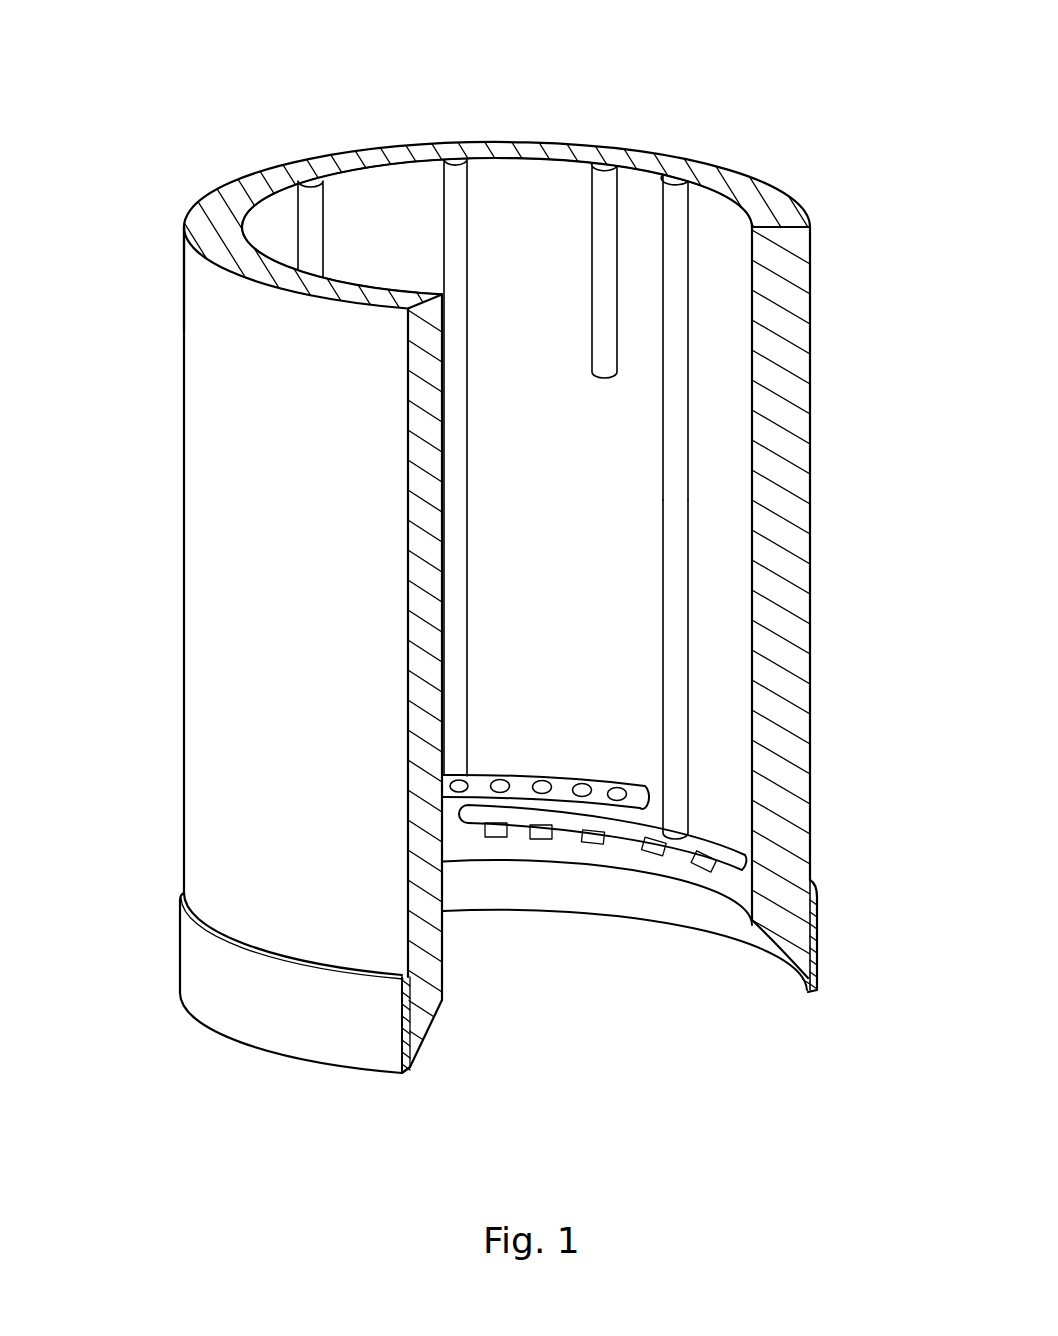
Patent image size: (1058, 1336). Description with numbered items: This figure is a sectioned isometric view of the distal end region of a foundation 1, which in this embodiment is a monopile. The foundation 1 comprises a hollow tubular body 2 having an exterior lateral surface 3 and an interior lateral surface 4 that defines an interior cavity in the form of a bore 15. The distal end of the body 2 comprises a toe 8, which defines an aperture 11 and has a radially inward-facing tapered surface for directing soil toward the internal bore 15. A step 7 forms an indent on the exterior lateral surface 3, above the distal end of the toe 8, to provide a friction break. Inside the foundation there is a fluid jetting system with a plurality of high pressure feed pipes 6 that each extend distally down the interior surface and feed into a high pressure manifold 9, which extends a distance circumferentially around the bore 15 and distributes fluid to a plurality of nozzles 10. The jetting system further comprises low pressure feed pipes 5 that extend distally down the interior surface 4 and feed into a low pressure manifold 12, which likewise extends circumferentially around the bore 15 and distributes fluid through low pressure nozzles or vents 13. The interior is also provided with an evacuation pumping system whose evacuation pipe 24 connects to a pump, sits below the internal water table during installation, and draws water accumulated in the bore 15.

The foundation 1 is at (214, 128).
The hollow tubular body 2 is at (183, 308).
The exterior lateral surface 3 is at (195, 267).
The interior lateral surface 4 is at (378, 205).
The low pressure feed pipe 5 is at (460, 190).
The high pressure feed pipe 6 is at (673, 200).
The step 7 is at (820, 923).
The toe 8 is at (757, 932).
The high pressure manifold 9 is at (682, 842).
The nozzle 10 is at (593, 840).
The aperture 11 is at (465, 948).
The low pressure manifold 12 is at (480, 784).
The low pressure nozzles or vents 13 is at (460, 783).
The bore 15 is at (580, 622).
The evacuation pipe 24 is at (603, 184).